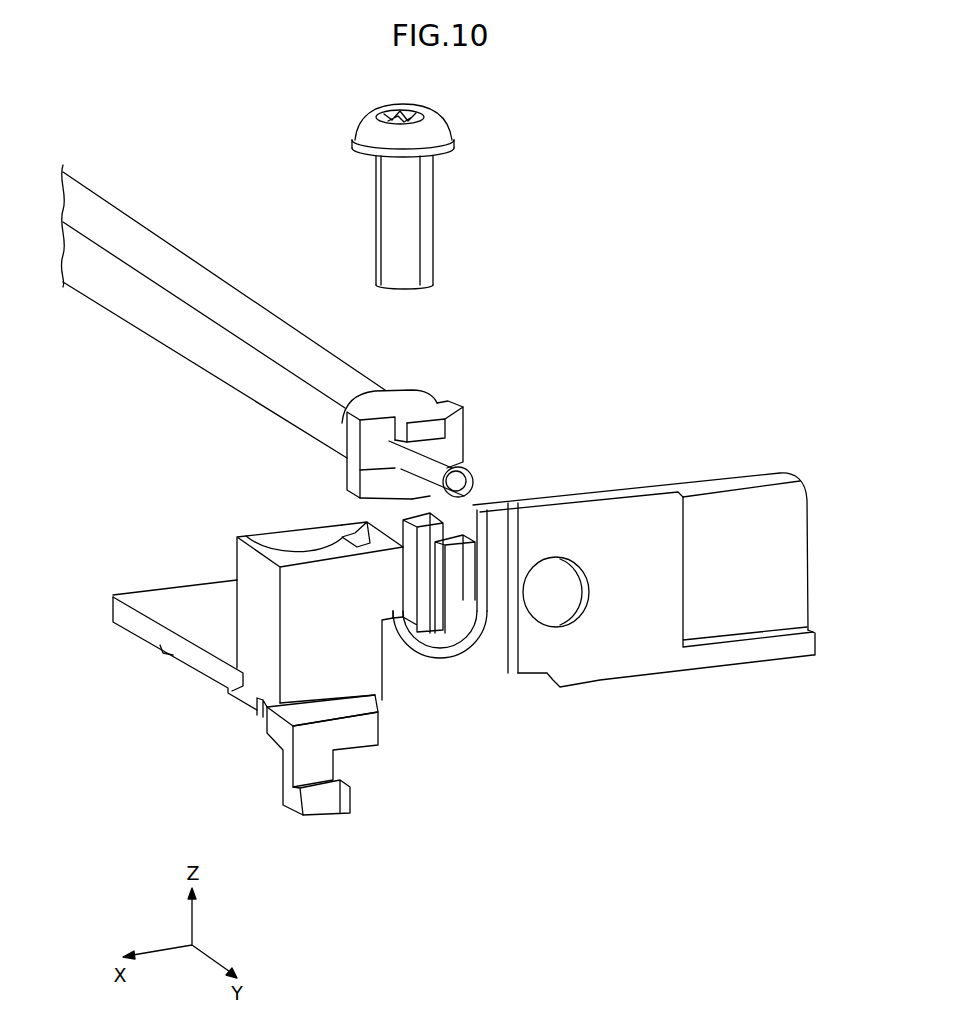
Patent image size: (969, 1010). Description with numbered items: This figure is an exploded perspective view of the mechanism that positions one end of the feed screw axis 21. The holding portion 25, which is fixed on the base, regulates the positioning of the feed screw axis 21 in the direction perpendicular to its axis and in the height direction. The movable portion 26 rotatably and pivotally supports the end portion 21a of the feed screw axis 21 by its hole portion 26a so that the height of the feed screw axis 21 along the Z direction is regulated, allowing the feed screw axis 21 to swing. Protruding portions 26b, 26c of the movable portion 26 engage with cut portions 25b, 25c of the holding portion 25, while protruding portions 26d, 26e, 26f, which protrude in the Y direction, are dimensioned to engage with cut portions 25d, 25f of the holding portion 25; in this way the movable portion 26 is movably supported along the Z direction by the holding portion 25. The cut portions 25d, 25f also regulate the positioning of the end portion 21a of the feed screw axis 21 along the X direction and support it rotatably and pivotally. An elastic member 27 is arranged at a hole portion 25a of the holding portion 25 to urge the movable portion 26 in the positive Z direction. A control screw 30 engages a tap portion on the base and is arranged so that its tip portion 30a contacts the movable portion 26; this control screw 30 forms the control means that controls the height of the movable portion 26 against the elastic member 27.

The feed screw axis 21 is at (148, 238).
The end portion of the feed screw axis 21a is at (462, 480).
The holding portion 25 is at (464, 654).
The hole portion of the holding portion 25a is at (438, 642).
The cut portion of the holding portion 25b is at (459, 525).
The cut portion of the holding portion 25c is at (300, 528).
The cut portion of the holding portion 25d is at (437, 590).
The cut portion of the holding portion 25f is at (338, 528).
The movable portion 26 is at (383, 416).
The hole portion of the movable portion 26a is at (370, 468).
The protruding portion of the movable portion 26b is at (460, 428).
The protruding portion of the movable portion 26c is at (367, 445).
The protruding portion of the movable portion 26d is at (433, 425).
The protruding portion of the movable portion 26e is at (417, 492).
The protruding portion of the movable portion 26f is at (385, 398).
The elastic member 27 is at (422, 576).
The control screw 30 is at (437, 208).
The tip portion of the control screw 30a is at (418, 287).